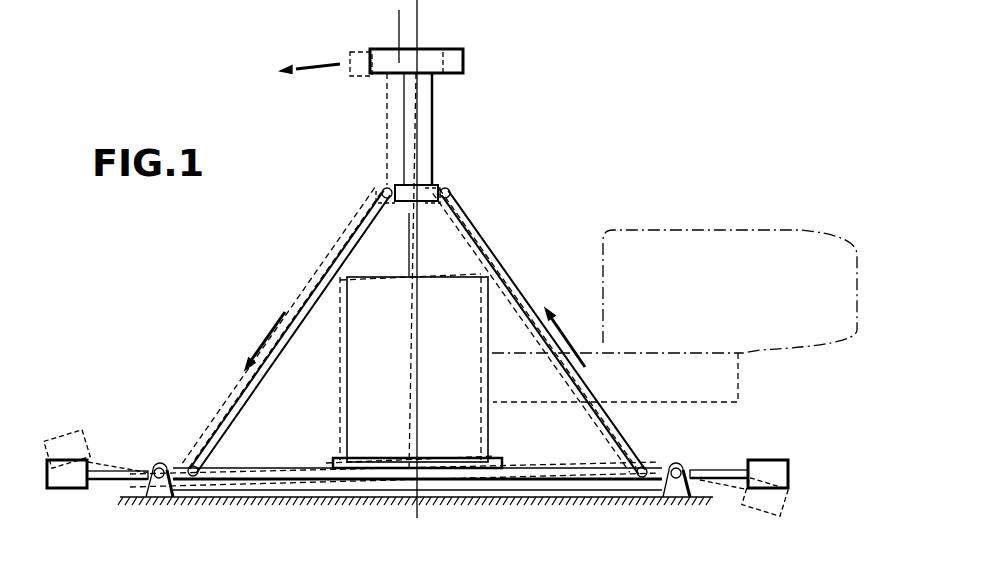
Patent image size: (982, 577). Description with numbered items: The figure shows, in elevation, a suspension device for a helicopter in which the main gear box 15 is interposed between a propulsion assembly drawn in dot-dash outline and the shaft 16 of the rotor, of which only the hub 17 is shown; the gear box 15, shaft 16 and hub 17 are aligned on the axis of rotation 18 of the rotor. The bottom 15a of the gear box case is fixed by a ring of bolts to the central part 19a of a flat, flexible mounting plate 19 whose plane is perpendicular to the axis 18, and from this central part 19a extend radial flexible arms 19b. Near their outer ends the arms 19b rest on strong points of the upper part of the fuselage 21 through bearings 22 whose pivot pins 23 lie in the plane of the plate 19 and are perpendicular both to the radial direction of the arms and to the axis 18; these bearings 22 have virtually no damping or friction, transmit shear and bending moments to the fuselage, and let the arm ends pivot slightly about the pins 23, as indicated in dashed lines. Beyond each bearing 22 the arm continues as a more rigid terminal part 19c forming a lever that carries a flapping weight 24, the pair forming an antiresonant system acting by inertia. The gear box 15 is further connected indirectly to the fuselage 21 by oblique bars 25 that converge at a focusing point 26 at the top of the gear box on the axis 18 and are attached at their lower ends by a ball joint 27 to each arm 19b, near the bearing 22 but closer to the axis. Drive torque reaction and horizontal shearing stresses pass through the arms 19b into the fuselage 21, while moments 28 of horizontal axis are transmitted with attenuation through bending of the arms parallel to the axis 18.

The main gear box 15 is at (488, 390).
The bottom of the case of the gear box 15a is at (338, 458).
The shaft 16 is at (428, 135).
The hub 17 is at (460, 60).
The axis of rotation 18 is at (418, 38).
The flexible mounting plate 19 is at (450, 484).
The central part 19a is at (380, 473).
The flexible arms 19b is at (238, 468).
The rigid terminal part 19c is at (100, 479).
The fuselage 21 is at (415, 518).
The bearings 22 is at (158, 488).
The pivot pins 23 is at (160, 468).
The flapping weight 24 is at (50, 488).
The oblique bars 25 is at (237, 412).
The focusing point 26 is at (438, 186).
The ball joint 27 is at (192, 466).
The moments 28 is at (315, 62).